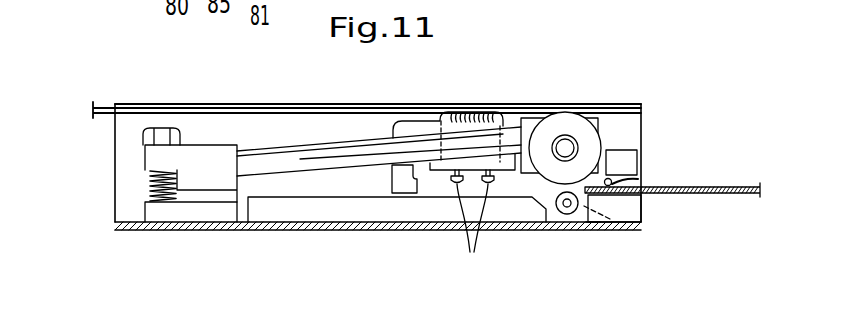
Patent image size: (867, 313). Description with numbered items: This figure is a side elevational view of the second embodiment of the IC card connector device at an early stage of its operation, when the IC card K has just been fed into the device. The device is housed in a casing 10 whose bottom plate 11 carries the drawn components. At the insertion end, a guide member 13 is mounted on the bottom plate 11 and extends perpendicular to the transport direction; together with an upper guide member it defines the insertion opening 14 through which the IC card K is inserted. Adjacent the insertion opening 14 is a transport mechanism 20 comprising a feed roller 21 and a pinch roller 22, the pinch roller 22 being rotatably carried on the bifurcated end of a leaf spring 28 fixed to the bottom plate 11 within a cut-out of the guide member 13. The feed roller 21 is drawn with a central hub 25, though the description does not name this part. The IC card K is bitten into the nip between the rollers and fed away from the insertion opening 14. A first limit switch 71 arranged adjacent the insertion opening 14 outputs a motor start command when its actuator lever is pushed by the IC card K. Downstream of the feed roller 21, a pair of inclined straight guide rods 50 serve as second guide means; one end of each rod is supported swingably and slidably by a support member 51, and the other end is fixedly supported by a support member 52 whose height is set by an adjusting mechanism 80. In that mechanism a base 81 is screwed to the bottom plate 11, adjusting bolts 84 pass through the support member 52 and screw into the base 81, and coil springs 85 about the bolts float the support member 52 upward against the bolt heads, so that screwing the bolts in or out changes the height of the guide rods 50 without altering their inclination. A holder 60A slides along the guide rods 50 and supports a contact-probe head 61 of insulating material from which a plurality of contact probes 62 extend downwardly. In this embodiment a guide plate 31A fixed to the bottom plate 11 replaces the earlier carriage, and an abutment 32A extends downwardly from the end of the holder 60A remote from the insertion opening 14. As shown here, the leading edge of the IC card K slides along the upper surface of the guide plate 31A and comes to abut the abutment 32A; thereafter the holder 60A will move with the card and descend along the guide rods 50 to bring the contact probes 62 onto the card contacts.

The casing 10 is at (616, 234).
The bottom plate 11 is at (517, 231).
The guide member 13 is at (628, 213).
The insertion opening 14 is at (626, 196).
The transport mechanism 20 is at (612, 124).
The feed roller 21 is at (564, 112).
The pinch roller 22 is at (566, 215).
The roller shaft 25 is at (574, 135).
The leaf spring 28 is at (594, 231).
The guide plate 31A is at (352, 205).
The abutment 32A is at (412, 195).
The guide rods 50 is at (304, 145).
The support member 51 is at (526, 118).
The support member 52 is at (212, 145).
The holder 60A is at (407, 121).
The contact-probe head 61 is at (448, 113).
The contact probes 62 is at (472, 224).
The first limit switch 71 is at (628, 160).
The adjusting mechanism 80 is at (123, 155).
The base 81 is at (183, 208).
The adjusting bolts 84 is at (163, 127).
The coil springs 85 is at (145, 182).
The IC card K is at (726, 186).